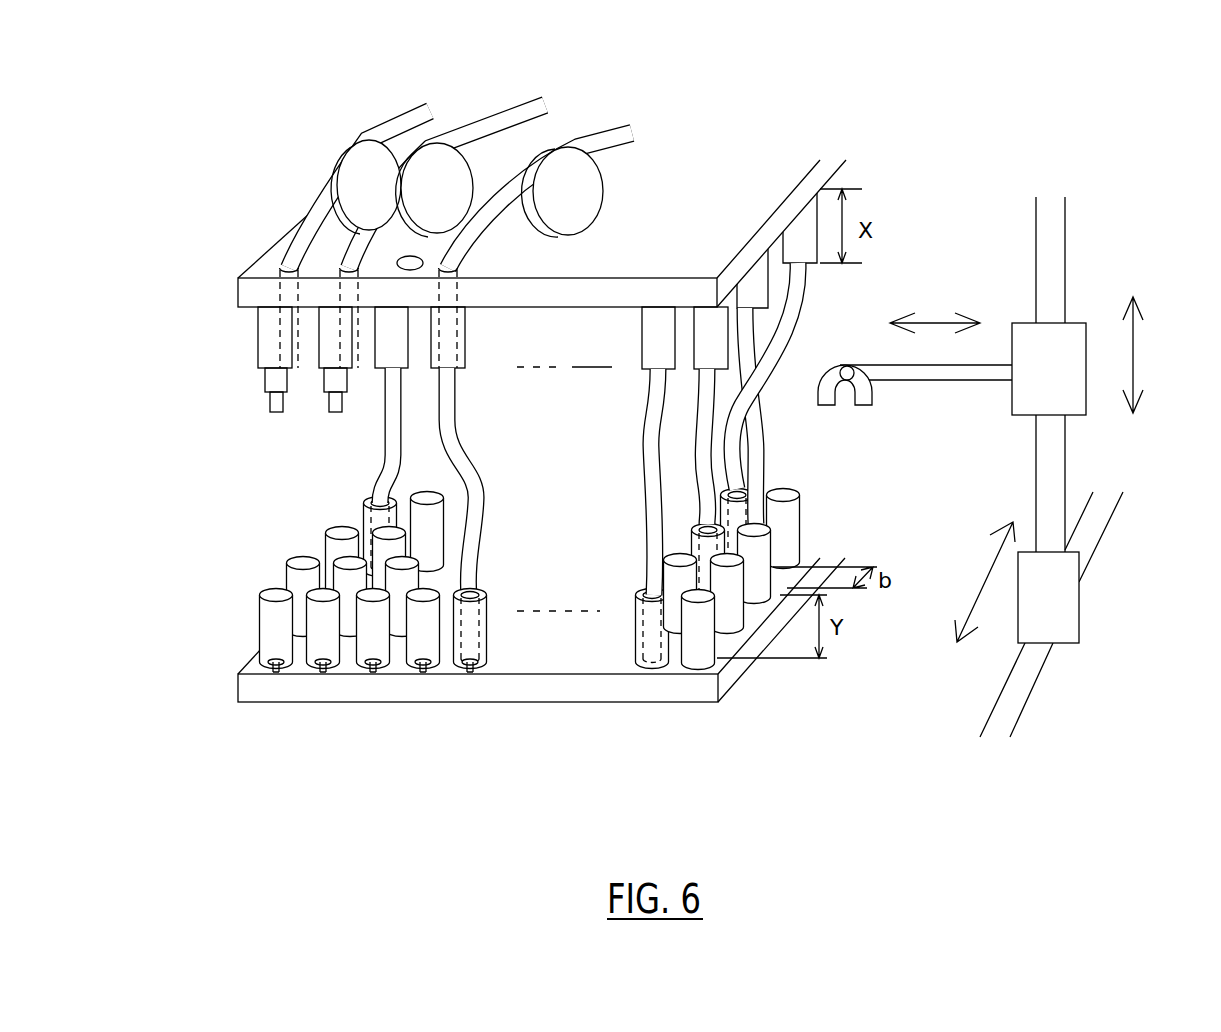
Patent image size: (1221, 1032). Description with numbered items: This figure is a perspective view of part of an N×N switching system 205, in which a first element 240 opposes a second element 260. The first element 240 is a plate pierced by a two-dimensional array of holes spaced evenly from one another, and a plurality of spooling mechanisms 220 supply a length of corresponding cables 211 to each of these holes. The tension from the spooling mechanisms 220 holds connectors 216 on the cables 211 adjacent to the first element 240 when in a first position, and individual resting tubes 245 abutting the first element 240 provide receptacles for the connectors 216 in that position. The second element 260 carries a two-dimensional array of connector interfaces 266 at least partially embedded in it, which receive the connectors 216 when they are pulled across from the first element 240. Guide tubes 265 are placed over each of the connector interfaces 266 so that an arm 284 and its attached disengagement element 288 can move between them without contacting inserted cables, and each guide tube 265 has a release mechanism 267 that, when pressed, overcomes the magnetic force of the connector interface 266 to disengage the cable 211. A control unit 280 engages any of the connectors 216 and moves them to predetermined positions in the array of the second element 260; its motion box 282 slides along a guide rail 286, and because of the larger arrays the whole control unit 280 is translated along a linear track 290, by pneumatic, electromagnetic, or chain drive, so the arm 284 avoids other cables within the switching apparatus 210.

The N×N switching system 205 is at (1006, 417).
The switching apparatus 210 is at (507, 663).
The cables 211 is at (480, 118).
The connectors 216 is at (360, 378).
The spooling mechanisms 220 is at (449, 193).
The first element 240 is at (563, 288).
The resting tubes 245 is at (260, 356).
The second element 260 is at (684, 704).
The guide tubes 265 is at (262, 628).
The connector interfaces 266 is at (453, 668).
The release mechanism 267 is at (373, 664).
The control unit 280 is at (1075, 648).
The motion box 282 is at (1075, 338).
The arm 284 is at (884, 372).
The guide rail 286 is at (1057, 467).
The disengagement element 288 is at (858, 400).
The linear track 290 is at (1003, 727).